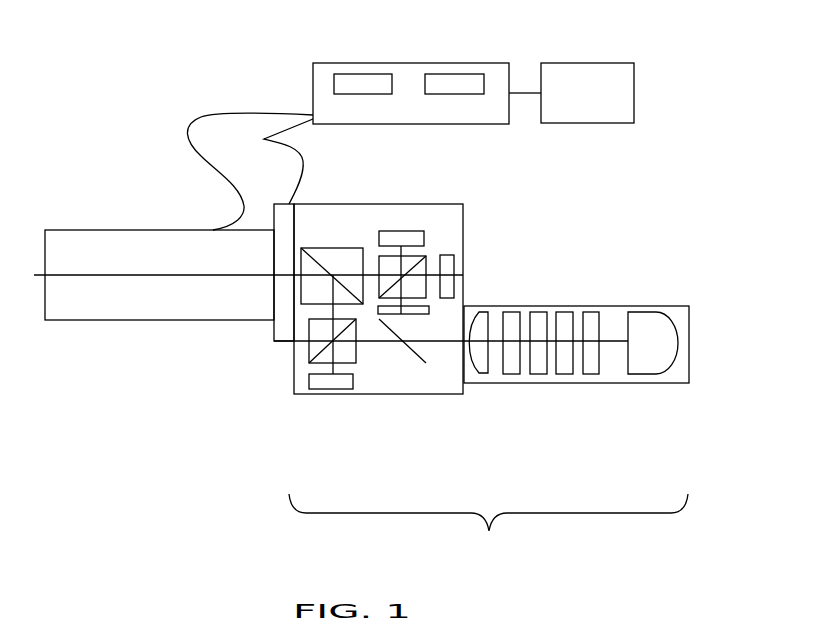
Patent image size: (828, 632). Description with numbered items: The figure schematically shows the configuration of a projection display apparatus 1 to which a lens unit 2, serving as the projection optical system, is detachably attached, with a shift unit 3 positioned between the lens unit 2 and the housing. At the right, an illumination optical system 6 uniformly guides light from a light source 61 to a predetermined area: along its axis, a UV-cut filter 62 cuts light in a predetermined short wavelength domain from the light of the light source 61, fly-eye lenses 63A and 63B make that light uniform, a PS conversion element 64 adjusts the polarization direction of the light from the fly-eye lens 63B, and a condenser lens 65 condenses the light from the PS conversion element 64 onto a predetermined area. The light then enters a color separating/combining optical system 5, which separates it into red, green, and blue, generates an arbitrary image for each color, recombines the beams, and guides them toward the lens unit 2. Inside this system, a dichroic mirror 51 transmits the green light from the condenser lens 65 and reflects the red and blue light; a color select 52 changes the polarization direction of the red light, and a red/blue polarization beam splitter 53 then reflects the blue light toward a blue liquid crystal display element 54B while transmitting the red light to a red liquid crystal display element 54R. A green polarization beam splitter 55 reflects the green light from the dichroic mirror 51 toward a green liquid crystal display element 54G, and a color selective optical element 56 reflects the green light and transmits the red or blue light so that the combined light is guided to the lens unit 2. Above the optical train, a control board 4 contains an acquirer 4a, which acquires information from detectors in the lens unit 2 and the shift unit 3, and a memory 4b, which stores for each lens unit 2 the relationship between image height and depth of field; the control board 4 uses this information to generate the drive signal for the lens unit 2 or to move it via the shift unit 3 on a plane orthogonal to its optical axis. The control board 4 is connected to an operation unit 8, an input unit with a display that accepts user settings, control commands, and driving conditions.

The projection display apparatus 1 is at (488, 528).
The lens unit 2 is at (99, 229).
The shift unit 3 is at (285, 203).
The control board 4 is at (508, 62).
The acquirer 4a is at (357, 73).
The memory 4b is at (457, 73).
The color separating/combining optical system 5 is at (418, 202).
The illumination optical system 6 is at (603, 305).
The operation unit 8 is at (633, 70).
The dichroic mirror 51 is at (418, 357).
The color select 52 is at (418, 310).
The red/blue polarization beam splitter 53 is at (423, 257).
The red liquid crystal display element 54R is at (400, 228).
The green liquid crystal display element 54G is at (330, 383).
The blue liquid crystal display element 54B is at (455, 260).
The green polarization beam splitter 55 is at (313, 342).
The color selective optical element 56 is at (308, 297).
The light source 61 is at (665, 365).
The UV-cut filter 62 is at (590, 372).
The fly-eye lens 63A is at (563, 373).
The fly-eye lens 63B is at (535, 373).
The PS conversion element 64 is at (503, 373).
The condenser lens 65 is at (473, 363).